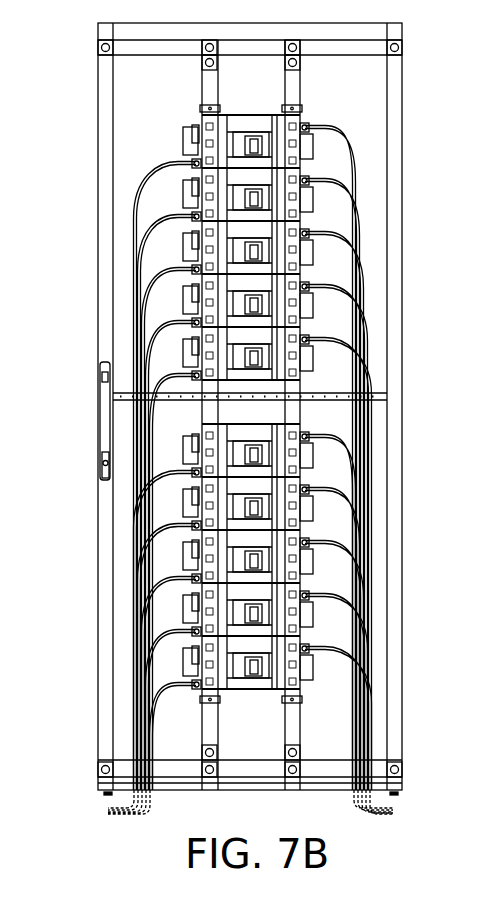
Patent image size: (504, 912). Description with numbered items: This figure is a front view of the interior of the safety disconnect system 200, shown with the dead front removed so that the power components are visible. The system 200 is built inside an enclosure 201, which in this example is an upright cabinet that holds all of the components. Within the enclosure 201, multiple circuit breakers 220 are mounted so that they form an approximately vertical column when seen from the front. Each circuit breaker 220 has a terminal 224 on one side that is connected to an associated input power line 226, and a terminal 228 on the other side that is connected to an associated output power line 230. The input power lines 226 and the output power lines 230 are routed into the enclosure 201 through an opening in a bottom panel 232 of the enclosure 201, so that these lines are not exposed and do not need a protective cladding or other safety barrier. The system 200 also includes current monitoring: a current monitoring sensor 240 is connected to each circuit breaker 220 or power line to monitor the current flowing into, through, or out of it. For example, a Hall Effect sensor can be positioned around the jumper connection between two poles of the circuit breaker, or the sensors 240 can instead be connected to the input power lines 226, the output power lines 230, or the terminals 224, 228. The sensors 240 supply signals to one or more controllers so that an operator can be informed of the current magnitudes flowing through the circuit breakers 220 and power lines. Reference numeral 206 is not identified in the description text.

The safety disconnect system 200 is at (414, 58).
The enclosure 201 is at (105, 525).
The power module 206 is at (250, 135).
The circuit breaker 220 is at (248, 116).
The terminal 224 is at (192, 158).
The input power line 226 is at (137, 183).
The terminal 228 is at (307, 126).
The output power line 230 is at (366, 146).
The bottom panel 232 is at (175, 777).
The current monitoring sensor 240 is at (190, 347).